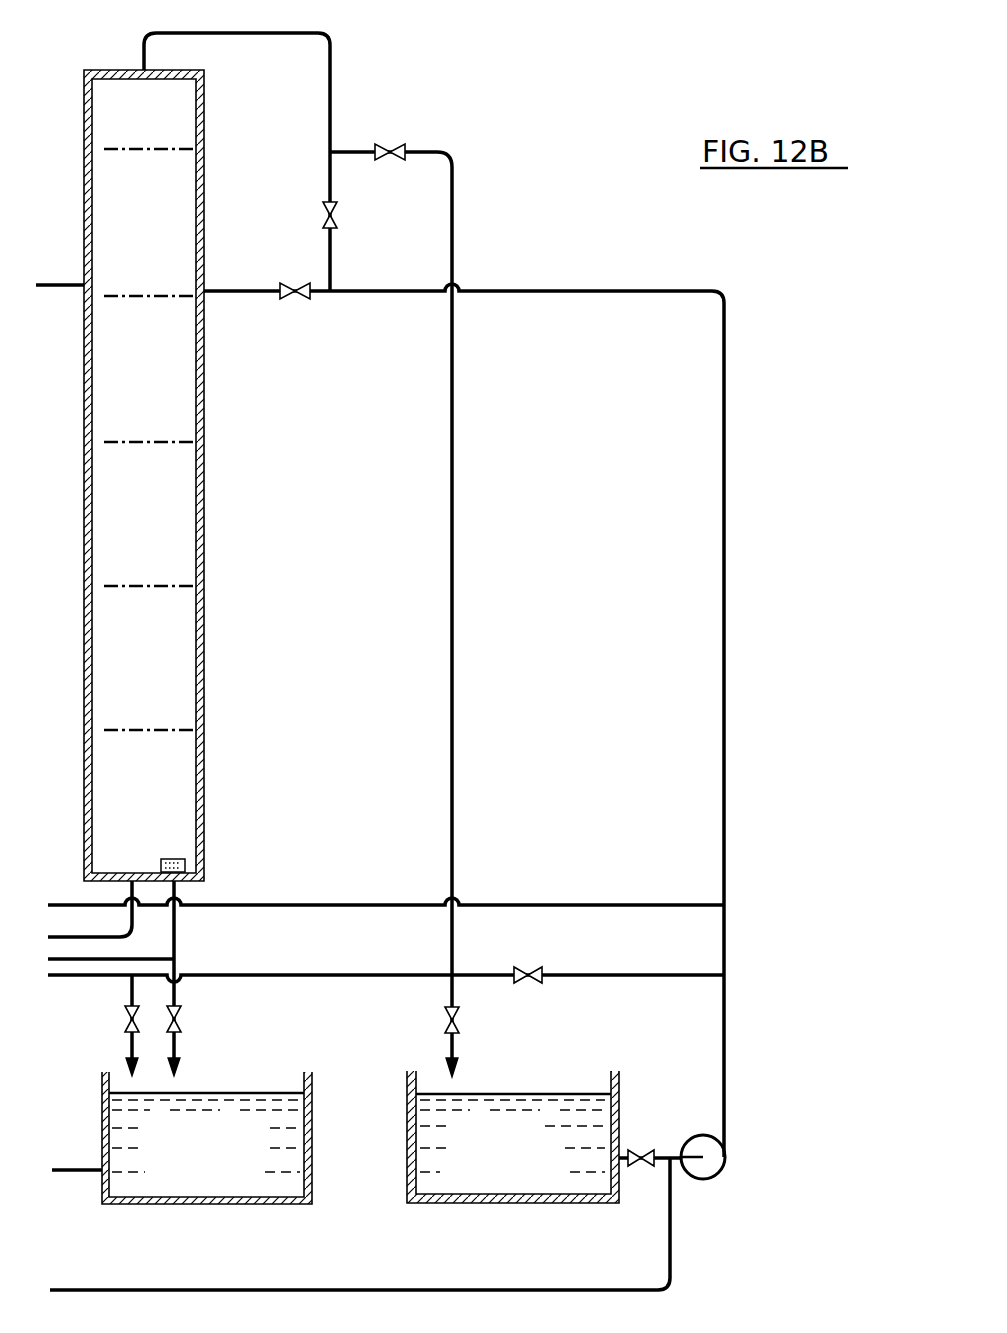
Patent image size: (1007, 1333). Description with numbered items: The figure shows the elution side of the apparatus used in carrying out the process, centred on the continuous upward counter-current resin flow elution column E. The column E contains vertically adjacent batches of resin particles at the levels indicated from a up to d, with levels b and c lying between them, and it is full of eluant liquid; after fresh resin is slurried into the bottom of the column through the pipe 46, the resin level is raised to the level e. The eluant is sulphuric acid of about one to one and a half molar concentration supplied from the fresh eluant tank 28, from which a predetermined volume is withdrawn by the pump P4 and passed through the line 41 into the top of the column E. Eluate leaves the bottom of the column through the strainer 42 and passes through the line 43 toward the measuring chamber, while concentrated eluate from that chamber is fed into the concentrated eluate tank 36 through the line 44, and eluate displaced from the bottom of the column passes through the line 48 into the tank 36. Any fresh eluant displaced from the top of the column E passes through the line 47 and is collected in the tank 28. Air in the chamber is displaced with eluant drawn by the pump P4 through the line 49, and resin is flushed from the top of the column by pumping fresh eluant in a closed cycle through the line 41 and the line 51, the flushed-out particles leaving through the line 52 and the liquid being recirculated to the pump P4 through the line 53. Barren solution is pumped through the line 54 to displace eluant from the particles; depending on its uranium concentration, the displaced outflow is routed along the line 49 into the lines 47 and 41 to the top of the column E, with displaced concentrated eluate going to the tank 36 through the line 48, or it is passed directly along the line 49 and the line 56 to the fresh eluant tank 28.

The elution column E is at (204, 537).
The level a is at (164, 730).
The level b is at (164, 586).
The level c is at (163, 442).
The level d is at (163, 304).
The level e is at (164, 149).
The line 41 is at (283, 33).
The line 47 is at (453, 248).
The line 51 is at (238, 291).
The line 52 is at (70, 285).
The strainer 42 is at (170, 859).
The pipe 46 is at (68, 937).
The line 54 is at (313, 905).
The line 43 is at (145, 959).
The line 49 is at (310, 975).
The line 44 is at (130, 992).
The line 48 is at (178, 997).
The line 56 is at (456, 1050).
The concentrated eluate tank 36 is at (312, 1140).
The fresh eluant tank 28 is at (619, 1107).
The pump P4 is at (715, 1178).
The line 53 is at (108, 1290).